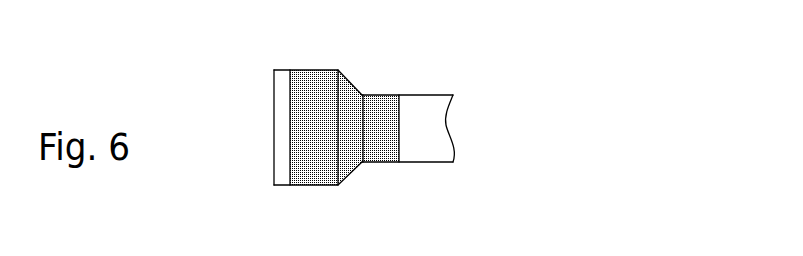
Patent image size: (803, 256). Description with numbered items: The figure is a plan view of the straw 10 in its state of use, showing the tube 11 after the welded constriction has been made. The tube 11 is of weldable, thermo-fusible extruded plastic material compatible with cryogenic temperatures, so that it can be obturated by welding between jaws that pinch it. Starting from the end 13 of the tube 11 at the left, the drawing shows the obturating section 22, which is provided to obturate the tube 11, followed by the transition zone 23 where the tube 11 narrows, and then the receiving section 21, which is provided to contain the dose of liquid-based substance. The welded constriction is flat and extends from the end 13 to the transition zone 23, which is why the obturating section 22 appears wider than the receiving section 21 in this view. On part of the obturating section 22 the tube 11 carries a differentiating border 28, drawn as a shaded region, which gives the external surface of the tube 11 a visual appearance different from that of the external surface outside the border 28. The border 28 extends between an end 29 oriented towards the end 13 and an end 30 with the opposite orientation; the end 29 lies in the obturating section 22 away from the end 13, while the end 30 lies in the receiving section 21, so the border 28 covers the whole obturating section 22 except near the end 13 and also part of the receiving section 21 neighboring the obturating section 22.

The straw 10 is at (497, 51).
The tube 11 is at (440, 127).
The end 13 is at (274, 125).
The receiving section 21 is at (430, 69).
The obturating section 22 is at (338, 58).
The transition zone 23 is at (356, 88).
The differentiating border 28 is at (383, 152).
The end 29 is at (288, 177).
The end 30 is at (398, 143).